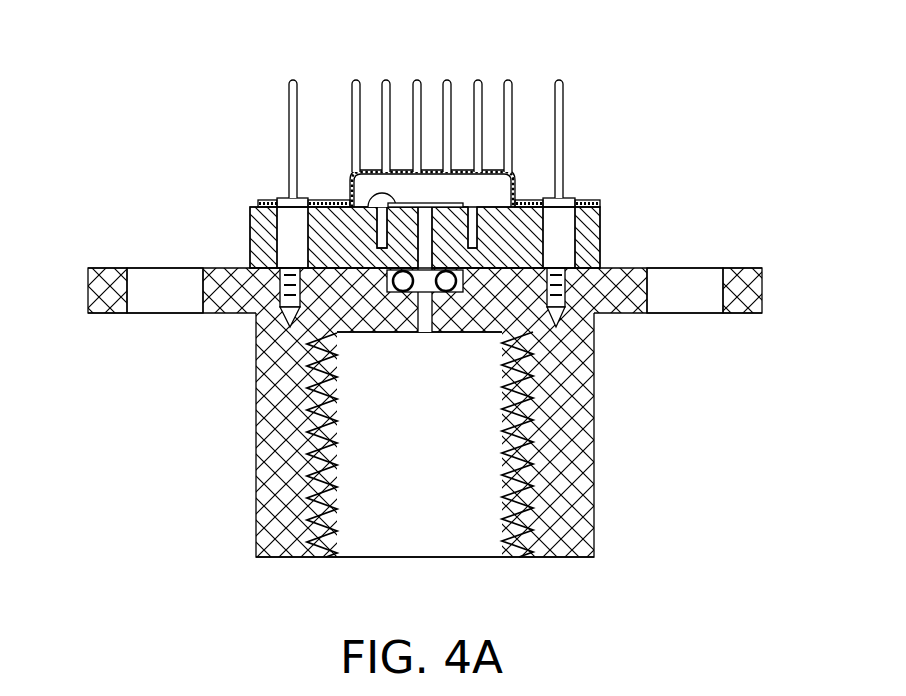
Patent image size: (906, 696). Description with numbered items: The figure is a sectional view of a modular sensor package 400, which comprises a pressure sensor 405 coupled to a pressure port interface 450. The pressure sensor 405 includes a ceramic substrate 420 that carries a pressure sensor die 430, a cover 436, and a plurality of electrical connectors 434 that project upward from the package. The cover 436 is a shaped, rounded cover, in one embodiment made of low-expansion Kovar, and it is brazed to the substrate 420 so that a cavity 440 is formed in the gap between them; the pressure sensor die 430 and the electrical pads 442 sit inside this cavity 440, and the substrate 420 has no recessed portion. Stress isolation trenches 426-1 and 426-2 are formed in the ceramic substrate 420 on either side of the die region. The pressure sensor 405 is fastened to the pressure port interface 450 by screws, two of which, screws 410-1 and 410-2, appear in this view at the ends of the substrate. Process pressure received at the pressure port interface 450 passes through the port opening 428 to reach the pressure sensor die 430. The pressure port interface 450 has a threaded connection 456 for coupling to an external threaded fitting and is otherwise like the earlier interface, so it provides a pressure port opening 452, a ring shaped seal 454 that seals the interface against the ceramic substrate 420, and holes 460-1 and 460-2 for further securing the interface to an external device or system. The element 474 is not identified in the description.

The modular sensor package 400 is at (238, 62).
The pressure sensor 405 is at (694, 58).
The screw 410-1 is at (255, 253).
The screw 410-2 is at (556, 228).
The ceramic substrate 420 is at (600, 213).
The stress isolation trench 426-1 is at (380, 240).
The stress isolation trench 426-2 is at (474, 238).
The port opening 428 is at (478, 274).
The pressure sensor die 430 is at (440, 200).
The electrical connectors 434 is at (450, 58).
The cover 436 is at (266, 188).
The cavity 440 is at (485, 183).
The electrical pads 442 is at (296, 233).
The pressure port interface 450 is at (596, 502).
The pressure port opening 452 is at (404, 512).
The ring shaped seal 454 is at (395, 284).
The threaded connection 456 is at (524, 548).
The hole 460-1 is at (134, 314).
The hole 460-2 is at (704, 314).
The dome 474 is at (380, 195).